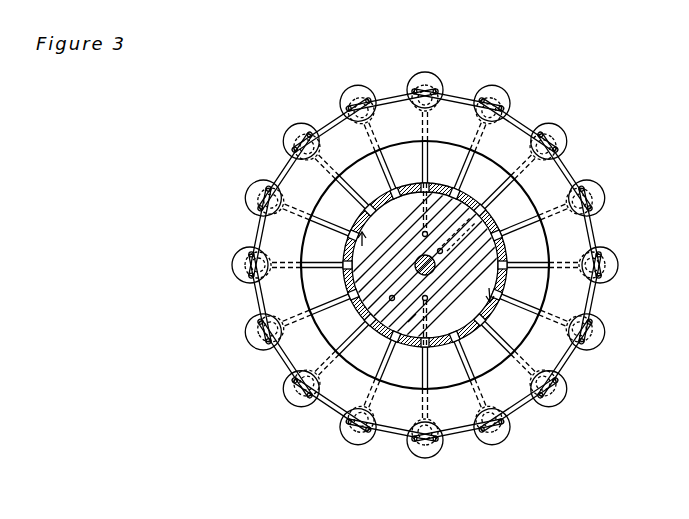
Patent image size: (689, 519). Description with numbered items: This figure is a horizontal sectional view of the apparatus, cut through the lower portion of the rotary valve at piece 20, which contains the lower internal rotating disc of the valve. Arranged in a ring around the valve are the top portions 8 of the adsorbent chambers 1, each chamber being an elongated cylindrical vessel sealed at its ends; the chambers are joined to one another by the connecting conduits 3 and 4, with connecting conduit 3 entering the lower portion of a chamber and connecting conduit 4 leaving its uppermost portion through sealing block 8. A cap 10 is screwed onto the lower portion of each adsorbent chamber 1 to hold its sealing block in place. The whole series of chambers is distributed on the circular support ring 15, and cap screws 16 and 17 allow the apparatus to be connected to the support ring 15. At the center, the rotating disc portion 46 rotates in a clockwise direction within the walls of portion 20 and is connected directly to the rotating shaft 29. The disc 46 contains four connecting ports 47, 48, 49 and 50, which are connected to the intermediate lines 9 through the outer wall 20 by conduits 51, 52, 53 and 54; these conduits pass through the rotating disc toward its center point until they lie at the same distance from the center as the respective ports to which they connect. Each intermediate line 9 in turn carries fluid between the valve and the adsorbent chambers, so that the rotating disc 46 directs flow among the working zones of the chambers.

The adsorbent chamber 1 is at (414, 262).
The connecting conduit 3 is at (415, 279).
The connecting conduit 4 is at (400, 272).
The top portion (sealing block) 8 is at (431, 265).
The intermediate line 9 is at (425, 265).
The cap 10 is at (447, 267).
The support ring 15 is at (312, 360).
The cap screw 16 is at (425, 265).
The cap screw 17 is at (425, 265).
The lower portion of the rotary valve 20 is at (425, 265).
The rotating shaft 29 is at (425, 265).
The lower internal disc portion 46 is at (425, 258).
The connecting port 47 is at (440, 322).
The connecting port 48 is at (430, 279).
The connecting port 49 is at (385, 237).
The connecting port 50 is at (460, 261).
The conduit 51 is at (397, 316).
The conduit 52 is at (379, 290).
The conduit 53 is at (405, 210).
The conduit 54 is at (465, 235).